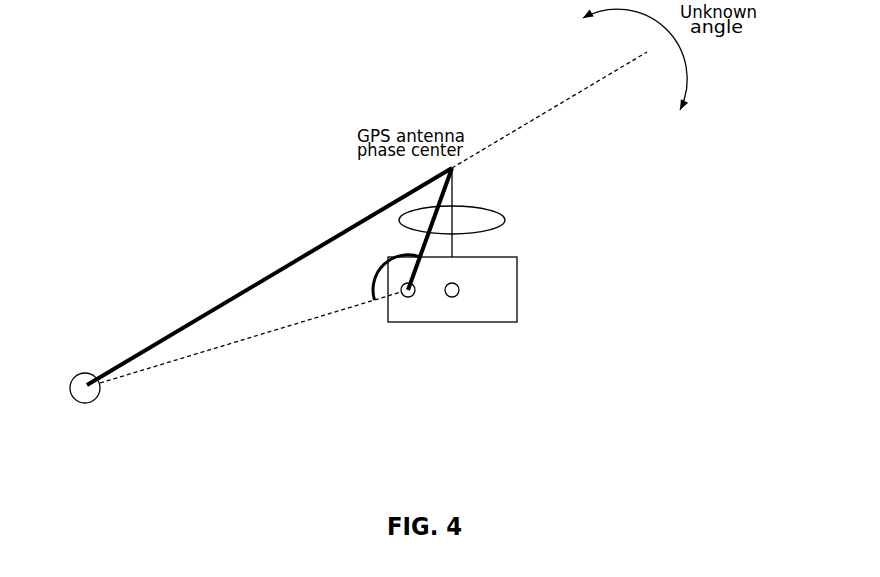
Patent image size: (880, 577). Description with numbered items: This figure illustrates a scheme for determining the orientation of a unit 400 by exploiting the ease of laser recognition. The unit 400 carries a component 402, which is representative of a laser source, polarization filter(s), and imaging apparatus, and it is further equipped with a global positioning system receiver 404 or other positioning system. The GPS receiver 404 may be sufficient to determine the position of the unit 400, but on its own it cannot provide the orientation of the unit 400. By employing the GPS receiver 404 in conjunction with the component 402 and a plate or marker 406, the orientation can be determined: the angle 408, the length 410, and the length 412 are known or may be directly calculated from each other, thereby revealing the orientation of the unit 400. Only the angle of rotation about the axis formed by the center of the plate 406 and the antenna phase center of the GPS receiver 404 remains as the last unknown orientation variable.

The unit 400 is at (515, 290).
The component 402 is at (408, 297).
The global positioning system (GPS) receiver 404 is at (452, 182).
The plate or marker 406 is at (78, 398).
The angle 408 is at (373, 285).
The length 410 is at (422, 245).
The length 412 is at (267, 280).